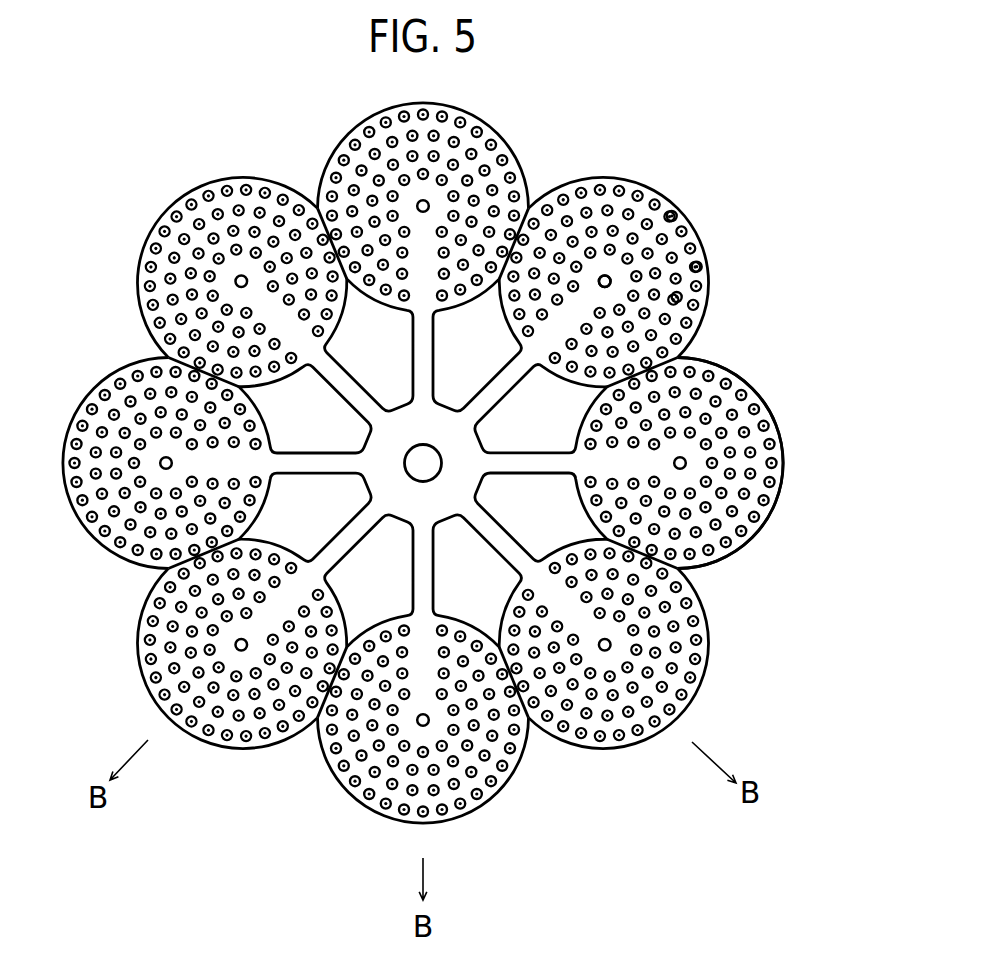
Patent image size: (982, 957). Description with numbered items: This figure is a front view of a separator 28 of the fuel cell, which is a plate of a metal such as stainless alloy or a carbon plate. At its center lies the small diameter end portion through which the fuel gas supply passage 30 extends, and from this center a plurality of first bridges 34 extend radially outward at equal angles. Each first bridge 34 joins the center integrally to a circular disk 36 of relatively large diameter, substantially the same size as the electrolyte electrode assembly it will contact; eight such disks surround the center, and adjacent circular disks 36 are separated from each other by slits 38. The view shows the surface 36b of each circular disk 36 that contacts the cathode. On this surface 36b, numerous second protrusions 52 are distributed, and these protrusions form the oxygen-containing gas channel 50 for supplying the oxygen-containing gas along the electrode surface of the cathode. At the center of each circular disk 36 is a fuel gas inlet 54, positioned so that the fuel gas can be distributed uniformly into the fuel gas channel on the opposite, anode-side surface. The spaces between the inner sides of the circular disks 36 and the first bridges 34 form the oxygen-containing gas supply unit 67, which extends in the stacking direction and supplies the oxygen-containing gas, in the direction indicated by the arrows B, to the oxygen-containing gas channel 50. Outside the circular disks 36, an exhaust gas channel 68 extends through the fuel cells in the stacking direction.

The separator 28 is at (671, 137).
The fuel gas supply passage 30 is at (423, 459).
The first bridge 34 is at (436, 352).
The circular disk 36 is at (524, 144).
The surface of circular disk contacting the cathode 36b is at (778, 460).
The slit 38 is at (150, 394).
The oxygen-containing gas channel 50 is at (648, 302).
The second protrusion 52 is at (677, 297).
The fuel gas inlet 54 is at (607, 276).
The oxygen-containing gas supply unit 67 is at (365, 585).
The exhaust gas channel 68 is at (764, 535).